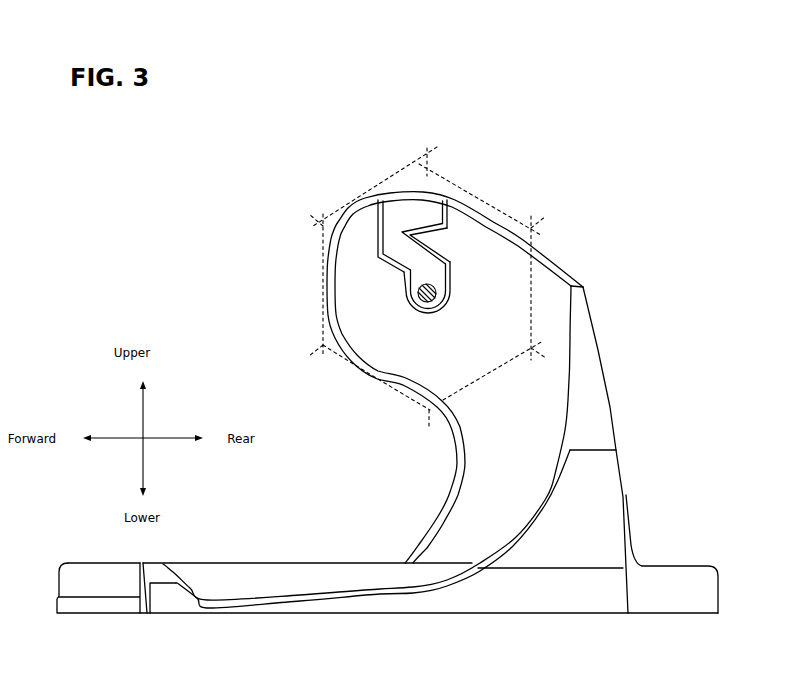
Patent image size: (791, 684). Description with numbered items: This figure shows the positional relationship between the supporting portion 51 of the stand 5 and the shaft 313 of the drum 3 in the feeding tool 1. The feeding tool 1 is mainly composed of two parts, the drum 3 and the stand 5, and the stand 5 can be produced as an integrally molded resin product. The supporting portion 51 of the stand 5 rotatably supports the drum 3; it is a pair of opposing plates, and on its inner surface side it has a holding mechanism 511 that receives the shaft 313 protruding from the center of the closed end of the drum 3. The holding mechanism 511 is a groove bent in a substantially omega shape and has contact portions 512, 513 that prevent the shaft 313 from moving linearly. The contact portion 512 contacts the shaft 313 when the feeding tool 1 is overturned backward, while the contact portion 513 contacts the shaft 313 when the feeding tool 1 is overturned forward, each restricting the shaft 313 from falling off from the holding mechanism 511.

The feeding tool 1 is at (146, 215).
The drum 3 is at (357, 373).
The shaft 313 is at (405, 288).
The stand 5 is at (618, 407).
The supporting portion 51 is at (483, 487).
The holding mechanism 511 is at (452, 264).
The contact portion 512 is at (431, 246).
The contact portion 513 is at (391, 212).